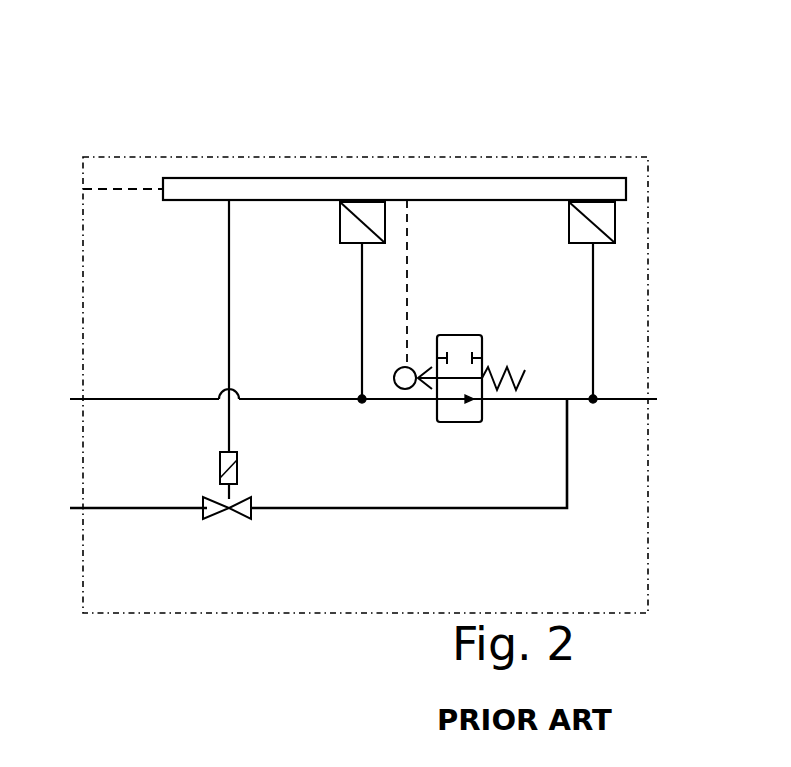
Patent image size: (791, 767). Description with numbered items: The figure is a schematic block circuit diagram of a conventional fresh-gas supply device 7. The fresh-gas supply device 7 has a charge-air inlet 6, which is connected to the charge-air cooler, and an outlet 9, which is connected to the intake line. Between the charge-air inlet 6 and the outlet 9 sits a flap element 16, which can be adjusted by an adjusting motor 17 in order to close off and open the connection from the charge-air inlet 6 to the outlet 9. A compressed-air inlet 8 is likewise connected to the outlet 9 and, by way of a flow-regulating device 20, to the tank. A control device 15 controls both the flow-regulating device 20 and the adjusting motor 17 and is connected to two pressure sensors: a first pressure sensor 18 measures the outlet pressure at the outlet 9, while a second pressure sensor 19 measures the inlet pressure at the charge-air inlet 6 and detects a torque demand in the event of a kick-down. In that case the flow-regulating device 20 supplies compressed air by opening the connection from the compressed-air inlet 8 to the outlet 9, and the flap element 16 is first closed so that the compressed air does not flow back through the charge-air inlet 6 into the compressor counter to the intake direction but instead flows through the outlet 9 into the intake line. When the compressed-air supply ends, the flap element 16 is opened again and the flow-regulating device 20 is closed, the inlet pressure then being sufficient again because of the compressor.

The fresh-gas supply device 7 is at (210, 132).
The control device 15 is at (170, 190).
The second pressure sensor 19 is at (357, 207).
The adjusting motor 17 is at (411, 367).
The first pressure sensor 18 is at (589, 208).
The flap element 16 is at (482, 365).
The charge-air inlet 6 is at (75, 398).
The outlet 9 is at (652, 398).
The compressed-air inlet 8 is at (74, 507).
The flow-regulating device 20 is at (207, 519).